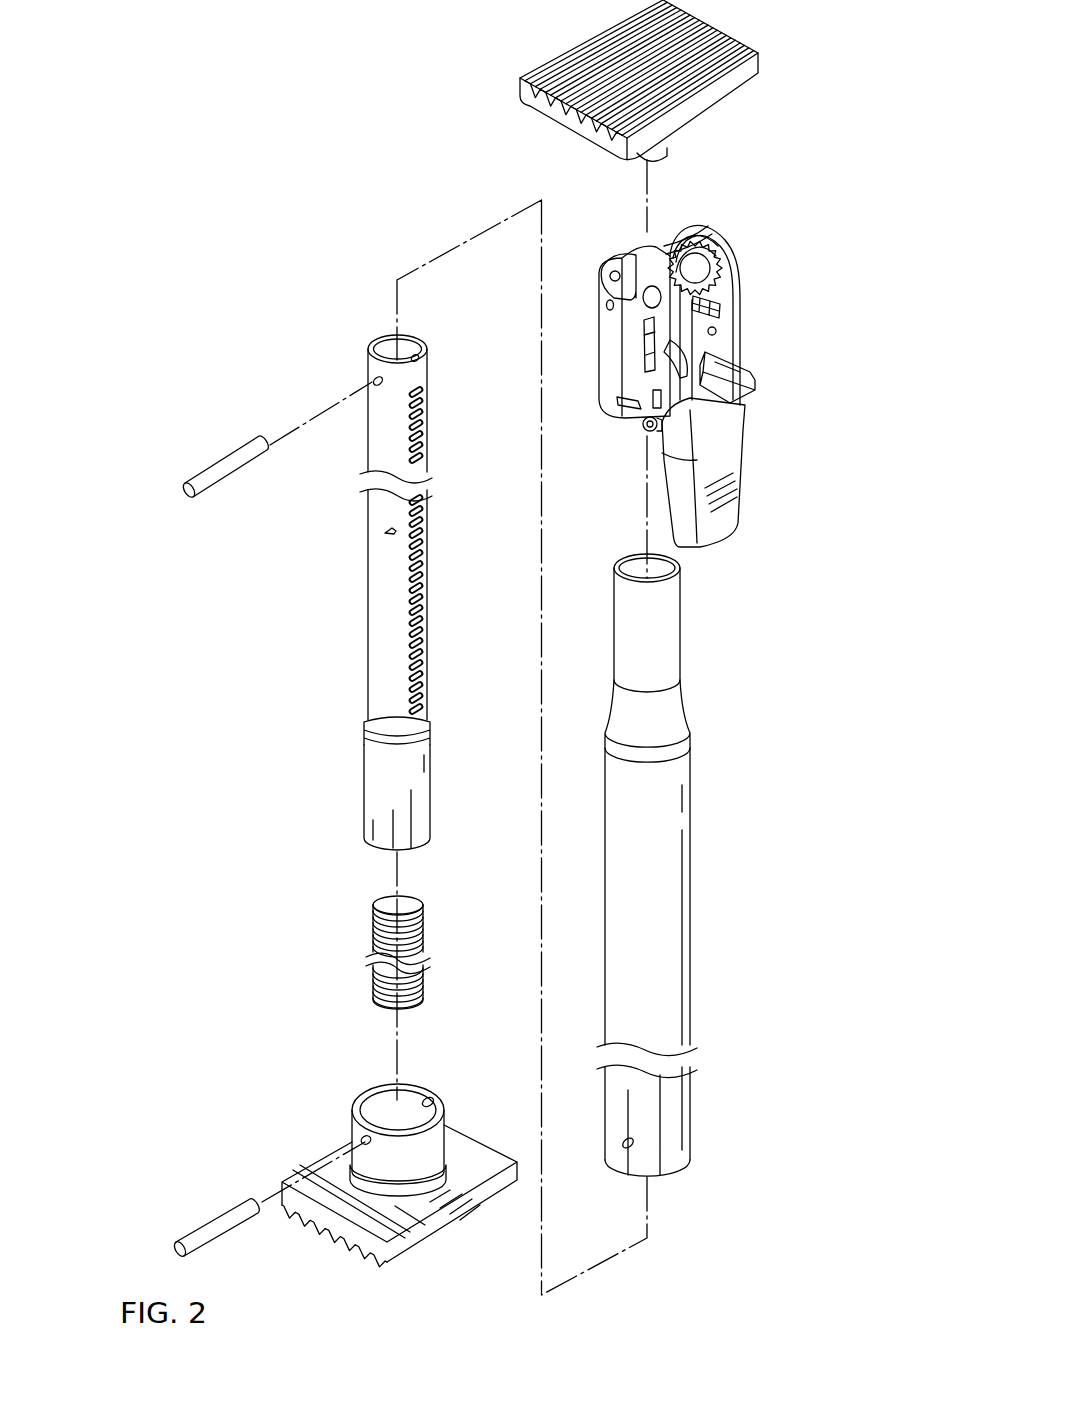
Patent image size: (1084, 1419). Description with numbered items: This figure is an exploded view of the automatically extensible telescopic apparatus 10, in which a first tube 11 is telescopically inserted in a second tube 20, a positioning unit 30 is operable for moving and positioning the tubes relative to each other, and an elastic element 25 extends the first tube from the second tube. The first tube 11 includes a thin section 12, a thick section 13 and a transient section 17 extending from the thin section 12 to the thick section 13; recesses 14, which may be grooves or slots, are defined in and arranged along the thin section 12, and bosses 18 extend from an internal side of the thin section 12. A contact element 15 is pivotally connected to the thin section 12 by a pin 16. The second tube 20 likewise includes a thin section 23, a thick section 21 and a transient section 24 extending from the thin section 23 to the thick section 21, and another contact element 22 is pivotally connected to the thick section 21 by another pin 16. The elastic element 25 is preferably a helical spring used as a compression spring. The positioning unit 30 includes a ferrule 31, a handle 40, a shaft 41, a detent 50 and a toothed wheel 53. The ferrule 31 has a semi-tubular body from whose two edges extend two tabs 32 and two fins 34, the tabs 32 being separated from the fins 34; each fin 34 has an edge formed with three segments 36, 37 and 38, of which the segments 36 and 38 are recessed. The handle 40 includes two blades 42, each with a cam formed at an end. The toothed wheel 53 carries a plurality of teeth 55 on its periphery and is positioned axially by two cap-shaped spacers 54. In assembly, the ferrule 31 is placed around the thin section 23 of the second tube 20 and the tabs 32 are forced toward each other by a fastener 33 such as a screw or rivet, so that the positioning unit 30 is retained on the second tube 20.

The automatically extensible telescopic apparatus 10 is at (360, 172).
The first tube 11 is at (407, 570).
The thin section 12 is at (373, 338).
The thick section 13 is at (407, 798).
The recesses 14 is at (420, 438).
The contact element 15 is at (737, 90).
The pin 16 is at (238, 462).
The transient section 17 is at (372, 733).
The bosses 18 is at (385, 531).
The second tube 20 is at (687, 865).
The thick section 21 is at (663, 1137).
The contact element 22 is at (463, 1150).
The thin section 23 is at (663, 652).
The transient section 24 is at (663, 726).
The elastic element 25 is at (425, 938).
The positioning unit 30 is at (780, 433).
The ferrule 31 is at (612, 317).
The tabs 32 is at (625, 415).
The fastener 33 is at (645, 432).
The fins 34 is at (637, 378).
The segment 36 is at (740, 378).
The segment 37 is at (716, 332).
The segment 38 is at (717, 228).
The handle 40 is at (713, 468).
The shaft 41 is at (648, 295).
The blades 42 is at (727, 410).
The detent 50 is at (645, 337).
The toothed wheel 53 is at (708, 278).
The spacers 54 is at (705, 262).
The teeth 55 is at (715, 297).